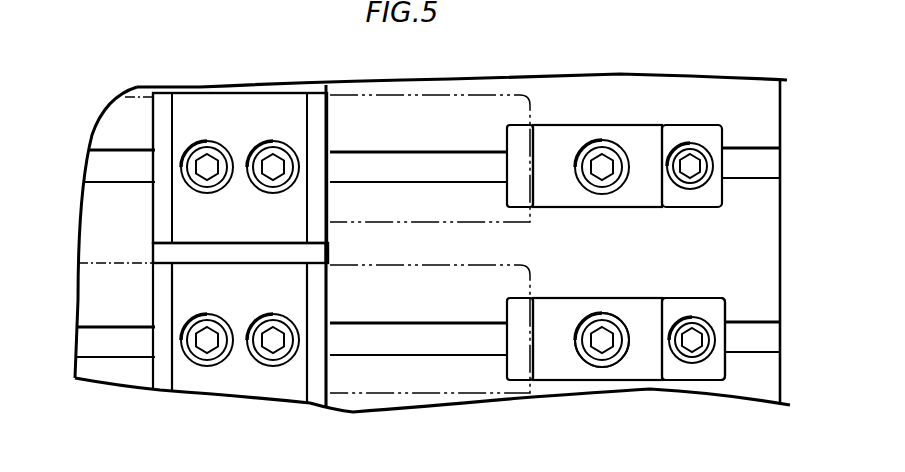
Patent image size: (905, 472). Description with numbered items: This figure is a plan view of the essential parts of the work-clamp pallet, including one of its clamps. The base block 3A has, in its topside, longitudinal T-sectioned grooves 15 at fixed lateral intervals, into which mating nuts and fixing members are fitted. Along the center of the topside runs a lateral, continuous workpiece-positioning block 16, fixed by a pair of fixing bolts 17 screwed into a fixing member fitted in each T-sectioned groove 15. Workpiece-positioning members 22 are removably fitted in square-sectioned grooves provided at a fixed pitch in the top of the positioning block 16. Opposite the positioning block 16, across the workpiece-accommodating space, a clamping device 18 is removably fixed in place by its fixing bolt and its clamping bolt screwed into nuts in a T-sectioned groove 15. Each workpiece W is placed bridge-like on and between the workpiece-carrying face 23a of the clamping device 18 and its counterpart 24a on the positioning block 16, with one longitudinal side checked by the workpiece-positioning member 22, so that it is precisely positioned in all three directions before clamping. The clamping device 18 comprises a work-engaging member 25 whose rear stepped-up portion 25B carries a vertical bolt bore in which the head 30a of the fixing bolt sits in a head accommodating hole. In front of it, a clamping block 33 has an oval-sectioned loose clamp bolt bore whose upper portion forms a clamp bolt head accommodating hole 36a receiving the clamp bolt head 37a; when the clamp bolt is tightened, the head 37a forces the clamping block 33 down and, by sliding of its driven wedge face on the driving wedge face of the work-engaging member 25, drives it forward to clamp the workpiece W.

The base block 3A is at (783, 297).
The T-sectioned groove 15 is at (768, 174).
The workpiece-positioning block 16 is at (232, 117).
The fixing bolt 17 is at (262, 353).
The clamping device 18 is at (614, 123).
The workpiece-positioning member 22 is at (273, 87).
The workpiece-carrying face 23a is at (522, 360).
The workpiece-carrying face 24a is at (319, 397).
The work-engaging member 25 is at (677, 292).
The stepped-up portion 25B is at (707, 303).
The head 30a is at (688, 355).
The clamping block 33 is at (565, 137).
The clamp bolt head accommodating hole 36a is at (620, 368).
The clamp bolt head 37a is at (597, 353).
The workpiece W is at (455, 95).